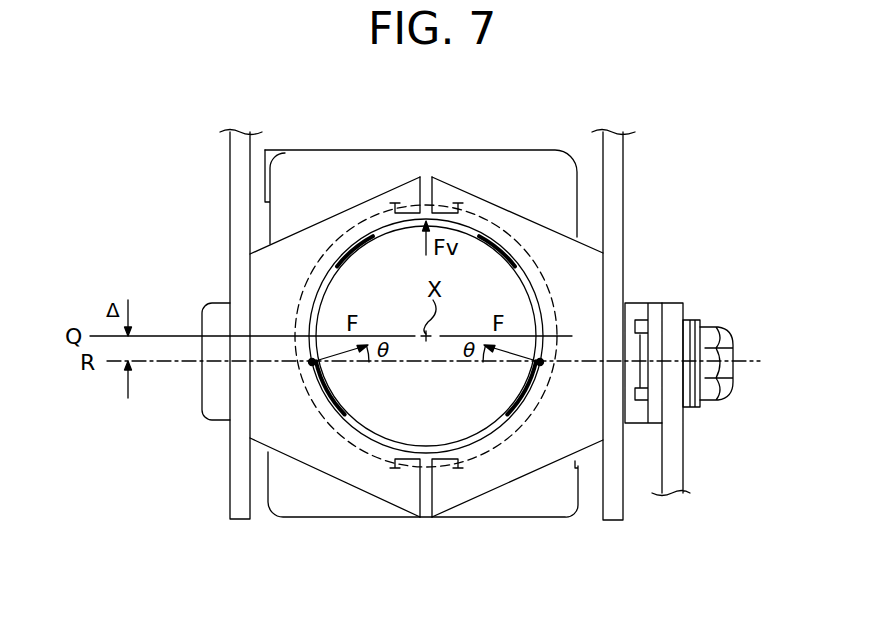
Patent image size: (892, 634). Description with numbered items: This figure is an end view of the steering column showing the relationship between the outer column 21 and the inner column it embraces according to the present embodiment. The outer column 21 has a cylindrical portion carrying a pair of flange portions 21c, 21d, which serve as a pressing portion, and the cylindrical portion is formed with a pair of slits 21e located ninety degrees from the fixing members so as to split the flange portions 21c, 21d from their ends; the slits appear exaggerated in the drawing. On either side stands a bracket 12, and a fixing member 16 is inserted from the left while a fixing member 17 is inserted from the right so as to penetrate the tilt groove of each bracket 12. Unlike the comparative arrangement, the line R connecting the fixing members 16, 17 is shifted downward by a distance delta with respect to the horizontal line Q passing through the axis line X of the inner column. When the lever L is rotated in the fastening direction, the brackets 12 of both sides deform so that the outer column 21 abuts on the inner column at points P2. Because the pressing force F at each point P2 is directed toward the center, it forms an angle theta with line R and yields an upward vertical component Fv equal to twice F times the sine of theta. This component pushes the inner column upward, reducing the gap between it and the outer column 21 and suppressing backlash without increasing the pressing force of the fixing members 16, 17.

The bracket 12 is at (230, 190).
The fixing member 16 is at (207, 303).
The fixing member 17 is at (723, 327).
The outer column 21 is at (482, 198).
The flange portion 21c is at (426, 528).
The flange portion 21d is at (330, 467).
The slit 21e is at (427, 190).
The abutting point P2 is at (312, 362).
The lever L is at (683, 463).